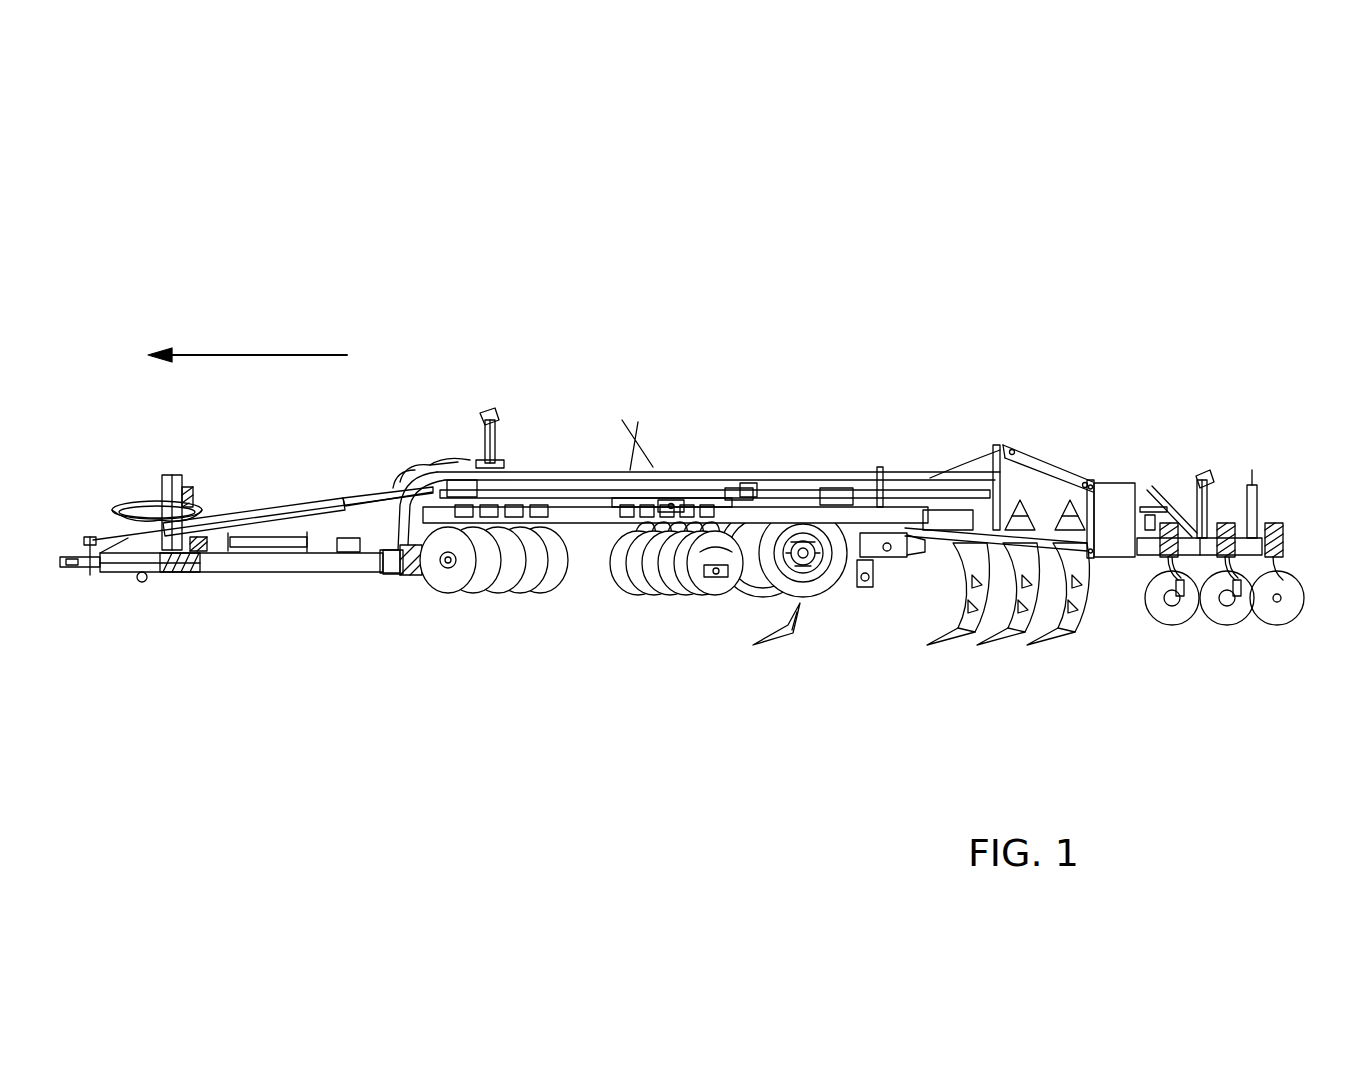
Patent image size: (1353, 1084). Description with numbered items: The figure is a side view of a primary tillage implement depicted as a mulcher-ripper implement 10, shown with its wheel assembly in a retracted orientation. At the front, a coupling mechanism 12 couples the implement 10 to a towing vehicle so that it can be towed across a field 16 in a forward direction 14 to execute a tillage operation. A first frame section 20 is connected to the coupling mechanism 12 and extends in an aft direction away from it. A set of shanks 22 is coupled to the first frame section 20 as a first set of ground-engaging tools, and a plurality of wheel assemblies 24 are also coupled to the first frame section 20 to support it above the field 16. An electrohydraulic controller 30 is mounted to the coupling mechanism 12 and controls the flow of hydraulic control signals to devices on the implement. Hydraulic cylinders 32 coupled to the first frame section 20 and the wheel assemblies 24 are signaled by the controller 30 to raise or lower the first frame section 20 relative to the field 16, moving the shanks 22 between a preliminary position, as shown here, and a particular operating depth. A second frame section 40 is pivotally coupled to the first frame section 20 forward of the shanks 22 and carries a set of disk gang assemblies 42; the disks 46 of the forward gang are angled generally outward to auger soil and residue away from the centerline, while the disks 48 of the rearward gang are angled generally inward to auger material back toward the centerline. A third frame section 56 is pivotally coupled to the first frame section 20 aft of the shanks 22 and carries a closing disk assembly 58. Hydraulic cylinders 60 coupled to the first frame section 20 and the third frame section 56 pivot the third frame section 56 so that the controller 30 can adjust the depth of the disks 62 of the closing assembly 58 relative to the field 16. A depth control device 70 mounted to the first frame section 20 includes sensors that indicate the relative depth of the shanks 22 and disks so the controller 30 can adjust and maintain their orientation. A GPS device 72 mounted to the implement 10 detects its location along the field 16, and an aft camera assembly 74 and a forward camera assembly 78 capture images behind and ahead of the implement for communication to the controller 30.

The mulcher-ripper implement 10 is at (595, 282).
The coupling mechanism 12 is at (274, 556).
The forward direction 14 is at (273, 355).
The field 16 is at (223, 722).
The first frame section 20 is at (568, 482).
The shanks 22 is at (1082, 635).
The wheel assemblies 24 is at (818, 600).
The electrohydraulic controller 30 is at (193, 485).
The hydraulic cylinders 32 is at (855, 575).
The second frame section 40 is at (605, 497).
The disk gang assemblies 42 is at (531, 655).
The disks of the forward disk gang assembly 46 is at (515, 575).
The disks of the rearward disk gang assembly 48 is at (670, 510).
The third frame section 56 is at (1222, 530).
The closing disk assembly 58 is at (1178, 648).
The hydraulic cylinders 60 is at (1050, 488).
The disks of the closing disk assembly 62 is at (1275, 603).
The depth control device 70 is at (458, 462).
The GPS device 72 is at (345, 535).
The aft camera assembly 74 is at (1195, 473).
The forward camera assembly 78 is at (488, 410).